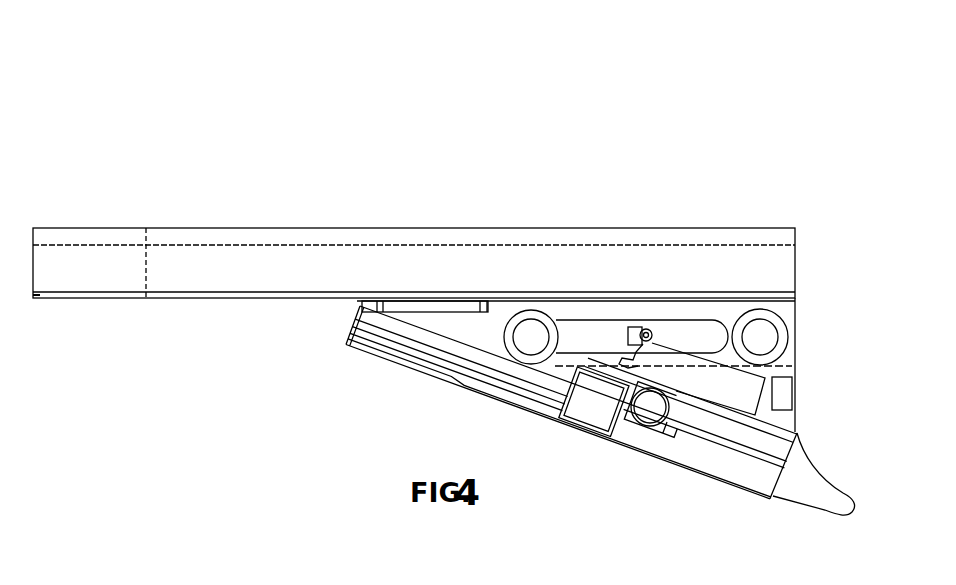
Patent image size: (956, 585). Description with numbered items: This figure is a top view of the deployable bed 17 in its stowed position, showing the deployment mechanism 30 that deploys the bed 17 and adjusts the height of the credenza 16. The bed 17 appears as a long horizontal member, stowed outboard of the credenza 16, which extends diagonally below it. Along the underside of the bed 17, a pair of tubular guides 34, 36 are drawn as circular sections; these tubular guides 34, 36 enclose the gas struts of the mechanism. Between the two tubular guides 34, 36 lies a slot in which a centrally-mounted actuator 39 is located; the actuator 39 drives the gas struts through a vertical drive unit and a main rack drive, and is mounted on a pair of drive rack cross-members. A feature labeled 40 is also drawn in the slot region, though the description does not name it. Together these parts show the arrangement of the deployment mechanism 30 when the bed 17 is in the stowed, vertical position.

The deployment mechanism 30 is at (474, 116).
The deployable bed 17 is at (313, 268).
The tubular guide 34 is at (523, 318).
The slot 40 is at (577, 333).
The actuator 39 is at (650, 330).
The tubular guide 36 is at (785, 337).
The credenza 16 is at (549, 403).